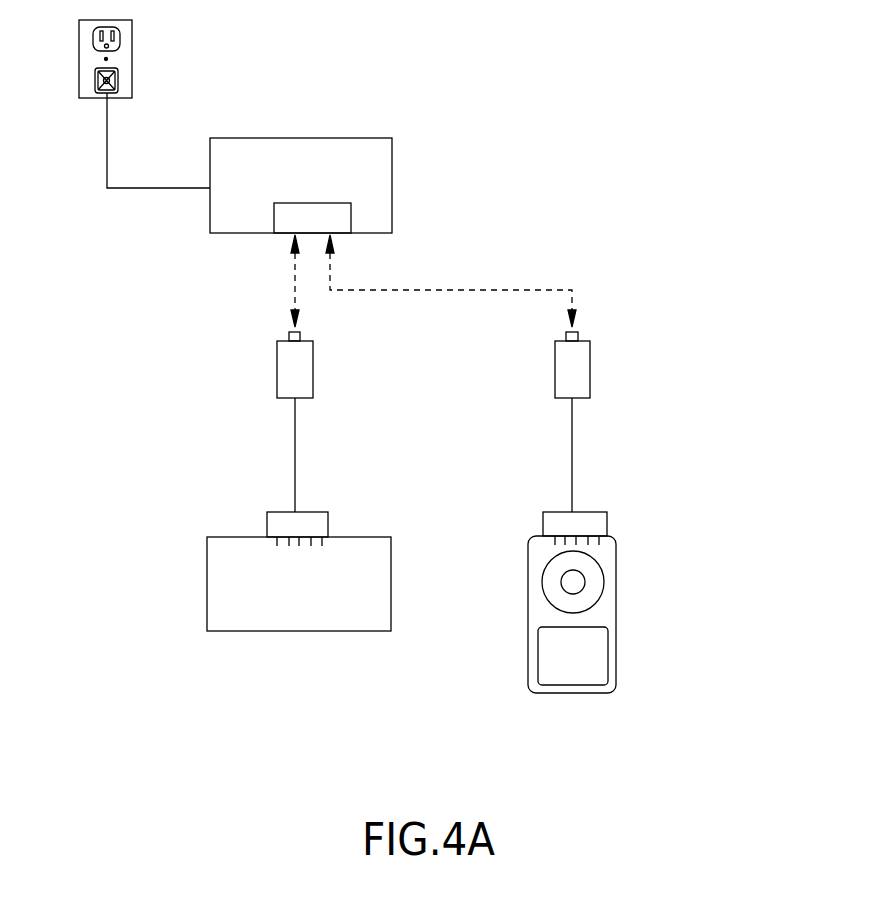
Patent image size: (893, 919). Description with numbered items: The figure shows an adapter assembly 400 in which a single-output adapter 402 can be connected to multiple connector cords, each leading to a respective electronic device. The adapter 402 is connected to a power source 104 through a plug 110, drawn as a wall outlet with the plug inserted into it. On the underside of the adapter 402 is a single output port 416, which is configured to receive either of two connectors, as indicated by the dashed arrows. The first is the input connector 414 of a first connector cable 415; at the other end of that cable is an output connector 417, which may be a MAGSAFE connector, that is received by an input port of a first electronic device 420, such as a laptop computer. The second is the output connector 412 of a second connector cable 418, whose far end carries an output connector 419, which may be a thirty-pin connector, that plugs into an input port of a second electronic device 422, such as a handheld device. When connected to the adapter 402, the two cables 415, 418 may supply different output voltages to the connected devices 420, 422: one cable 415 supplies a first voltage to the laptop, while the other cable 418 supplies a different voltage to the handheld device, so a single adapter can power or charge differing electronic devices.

The power source 104 is at (79, 80).
The plug 110 is at (118, 79).
The adapter 402 is at (308, 138).
The output port 416 is at (351, 218).
The input connector 414 is at (277, 368).
The first connector cable 415 is at (297, 438).
The output connector 417 is at (267, 524).
The first electronic device 420 is at (225, 631).
The output connector 412 is at (590, 372).
The second connector cable 418 is at (574, 453).
The output connector 419 is at (607, 522).
The second electronic device 422 is at (616, 615).
The adapter assembly 400 is at (763, 571).